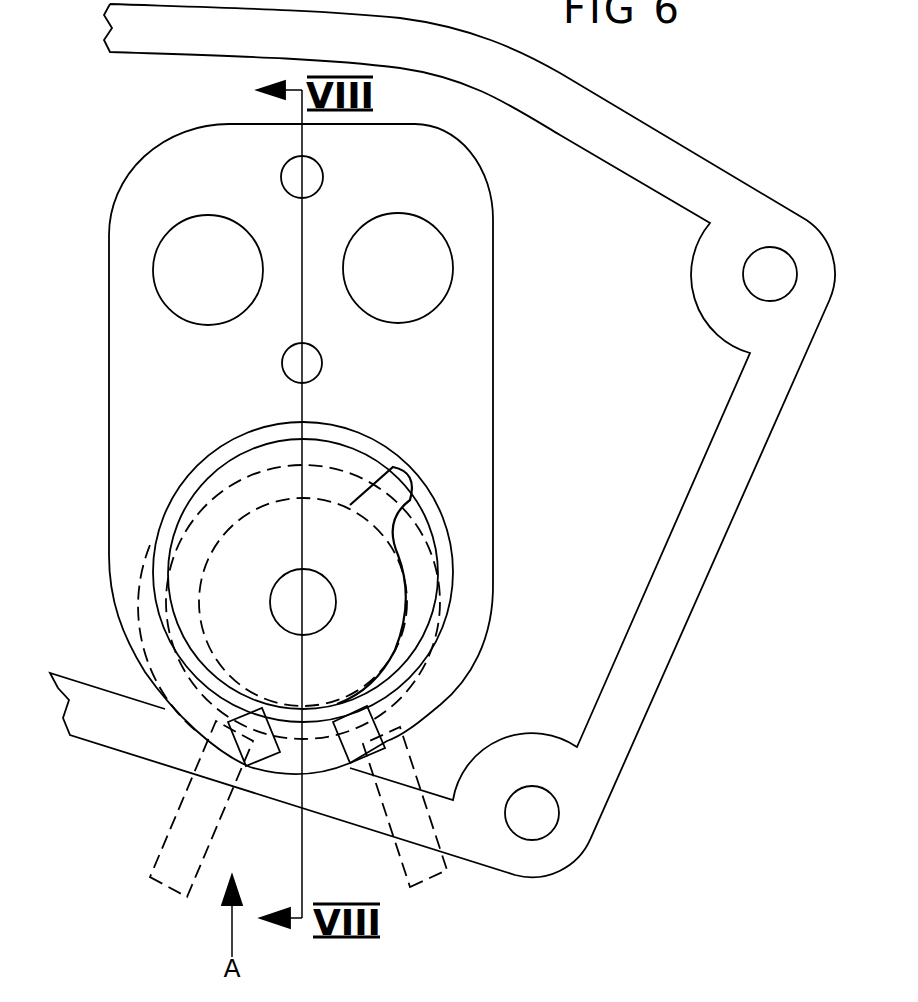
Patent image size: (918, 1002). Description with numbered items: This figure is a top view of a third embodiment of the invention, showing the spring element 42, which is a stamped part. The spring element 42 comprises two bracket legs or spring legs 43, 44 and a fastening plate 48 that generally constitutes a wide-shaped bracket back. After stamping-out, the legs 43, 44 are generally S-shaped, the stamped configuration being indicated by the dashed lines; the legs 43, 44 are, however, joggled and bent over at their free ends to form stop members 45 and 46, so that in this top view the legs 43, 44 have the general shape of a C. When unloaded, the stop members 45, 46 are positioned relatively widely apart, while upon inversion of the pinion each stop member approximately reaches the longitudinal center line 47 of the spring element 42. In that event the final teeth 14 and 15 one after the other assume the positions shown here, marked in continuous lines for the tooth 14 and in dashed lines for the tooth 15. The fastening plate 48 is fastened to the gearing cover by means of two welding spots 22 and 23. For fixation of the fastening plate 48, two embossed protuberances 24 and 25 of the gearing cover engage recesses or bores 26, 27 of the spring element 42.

The final tooth 14 is at (205, 740).
The final tooth 15 is at (400, 706).
The welding spot 22 is at (175, 272).
The welding spot 23 is at (432, 250).
The embossed protuberance 24 is at (292, 170).
The embossed protuberance 25 is at (292, 370).
The recess or bore 26 is at (322, 178).
The recess or bore 27 is at (322, 368).
The spring element 42 is at (505, 430).
The bracket leg 43 is at (127, 600).
The bracket leg 44 is at (470, 644).
The stop member 45 is at (162, 857).
The stop member 46 is at (430, 880).
The longitudinal center line 47 is at (307, 553).
The fastening plate 48 is at (420, 143).